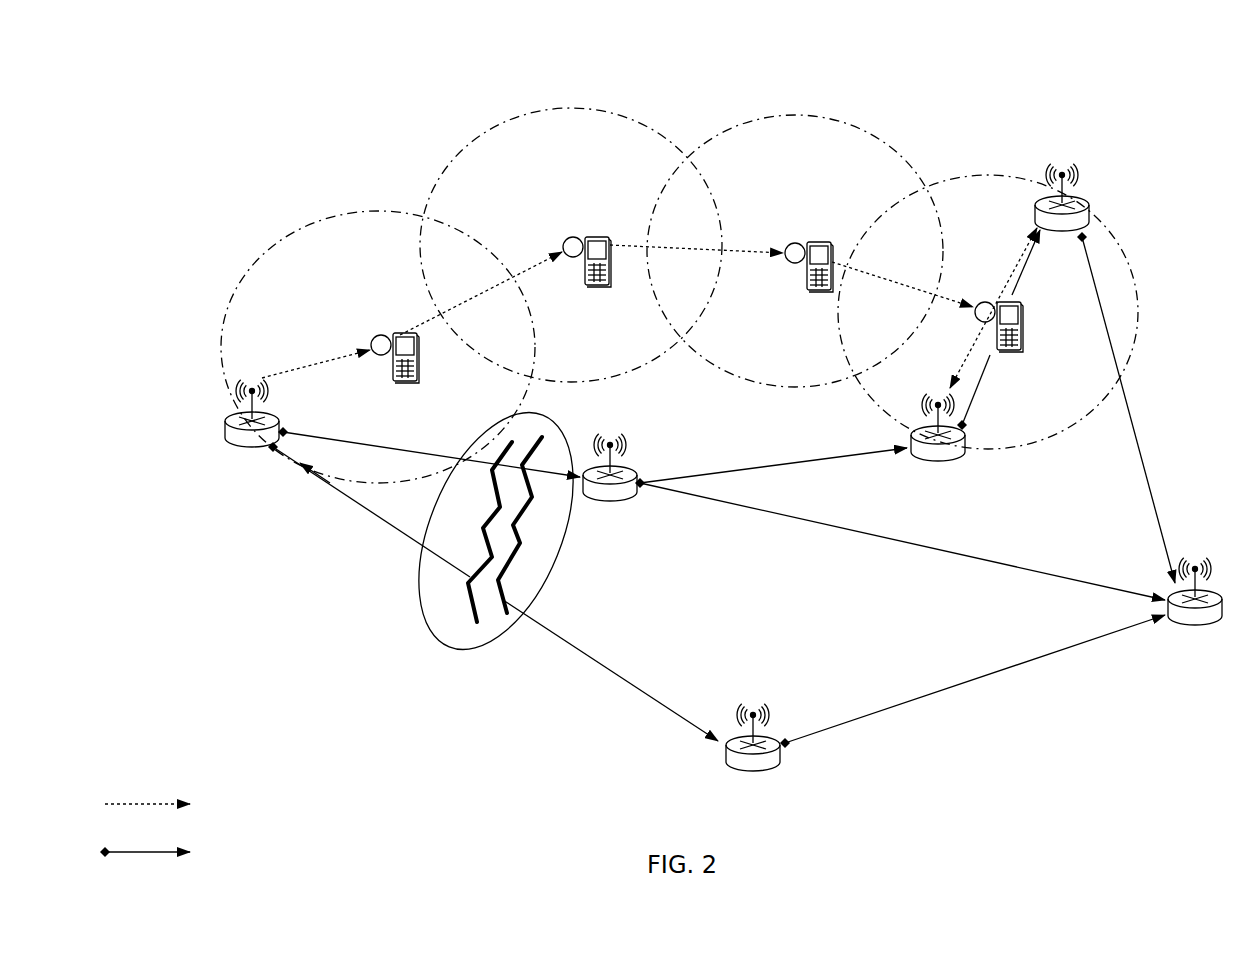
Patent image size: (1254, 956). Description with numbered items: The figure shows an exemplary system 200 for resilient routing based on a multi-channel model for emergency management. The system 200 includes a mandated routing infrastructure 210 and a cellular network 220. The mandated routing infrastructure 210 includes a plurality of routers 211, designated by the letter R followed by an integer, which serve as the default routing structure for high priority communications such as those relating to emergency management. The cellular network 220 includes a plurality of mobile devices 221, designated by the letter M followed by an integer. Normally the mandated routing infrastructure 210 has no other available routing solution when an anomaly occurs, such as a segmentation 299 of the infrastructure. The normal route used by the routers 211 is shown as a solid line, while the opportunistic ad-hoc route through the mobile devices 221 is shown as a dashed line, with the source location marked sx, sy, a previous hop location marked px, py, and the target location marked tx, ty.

The system 200 is at (776, 40).
The mandated routing infrastructure 210 is at (980, 735).
The routers 211 is at (243, 268).
The cellular network 220 is at (960, 142).
The mobile devices 221 is at (410, 200).
The segmentation 299 is at (446, 652).